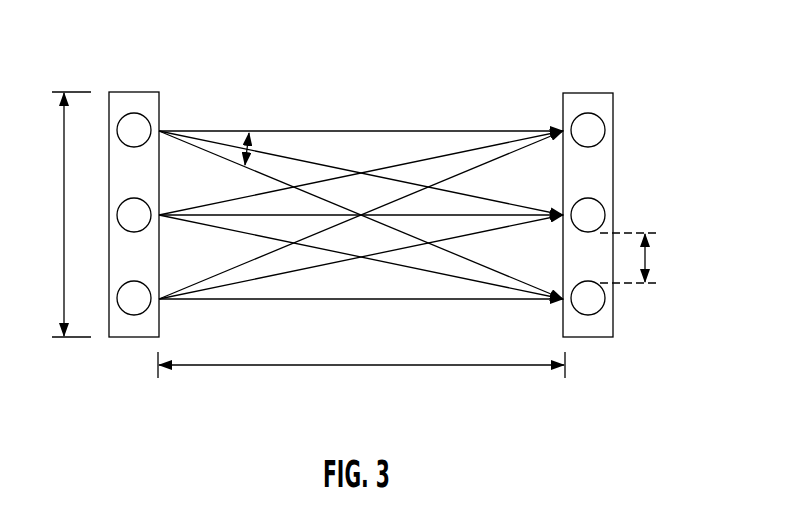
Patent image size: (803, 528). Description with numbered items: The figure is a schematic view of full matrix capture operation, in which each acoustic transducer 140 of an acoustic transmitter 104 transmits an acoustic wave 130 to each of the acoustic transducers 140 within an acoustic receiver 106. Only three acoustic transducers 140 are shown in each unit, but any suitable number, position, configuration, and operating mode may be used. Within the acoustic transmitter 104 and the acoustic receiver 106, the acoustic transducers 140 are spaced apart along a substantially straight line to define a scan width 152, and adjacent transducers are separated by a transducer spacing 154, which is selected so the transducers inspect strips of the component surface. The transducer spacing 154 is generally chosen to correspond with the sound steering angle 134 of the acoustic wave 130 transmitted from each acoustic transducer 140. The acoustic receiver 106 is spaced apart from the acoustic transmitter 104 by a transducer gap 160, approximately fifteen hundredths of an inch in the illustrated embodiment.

The acoustic transmitter 104 is at (136, 89).
The acoustic receiver 106 is at (589, 90).
The acoustic wave 130 is at (403, 130).
The sound steering angle 134 is at (250, 146).
The acoustic transducer 140 is at (128, 215).
The scan width 152 is at (63, 164).
The transducer spacing 154 is at (646, 259).
The transducer gap 160 is at (357, 367).